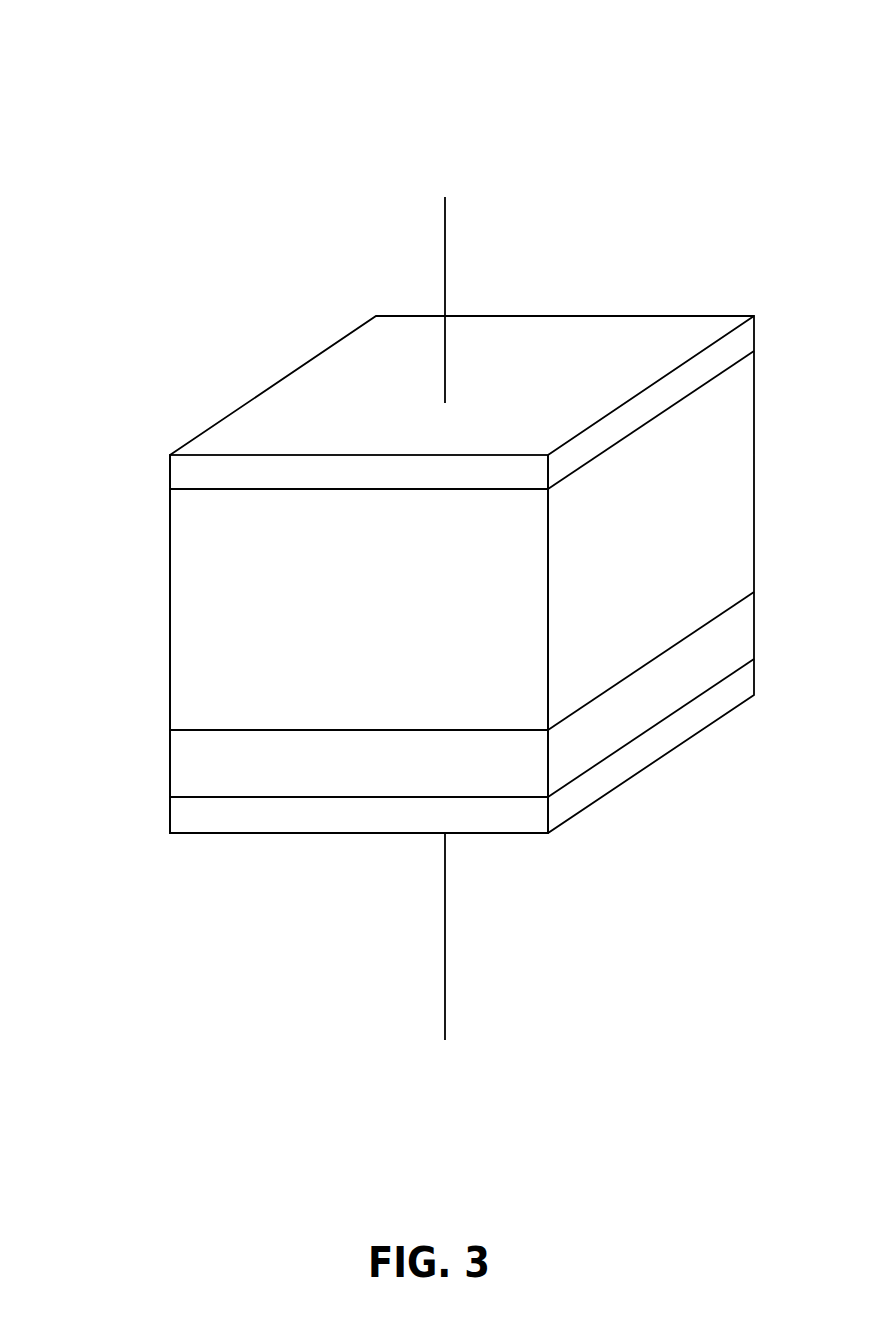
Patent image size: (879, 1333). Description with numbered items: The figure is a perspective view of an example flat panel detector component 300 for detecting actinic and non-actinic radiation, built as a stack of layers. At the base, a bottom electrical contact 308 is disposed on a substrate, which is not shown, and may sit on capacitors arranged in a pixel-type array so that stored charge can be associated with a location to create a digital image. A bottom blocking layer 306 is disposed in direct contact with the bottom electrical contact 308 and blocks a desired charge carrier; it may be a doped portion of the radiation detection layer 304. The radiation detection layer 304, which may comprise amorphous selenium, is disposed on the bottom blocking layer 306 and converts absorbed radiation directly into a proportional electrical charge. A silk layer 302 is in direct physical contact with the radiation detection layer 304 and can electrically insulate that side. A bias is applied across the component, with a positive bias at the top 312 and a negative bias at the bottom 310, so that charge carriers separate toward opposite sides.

The flat panel detector component 300 is at (160, 44).
The silk layer 302 is at (168, 472).
The radiation detection layer 304 is at (168, 608).
The bottom blocking layer 306 is at (168, 763).
The bottom electrical contact 308 is at (168, 815).
The bottom 310 is at (402, 1064).
The top 312 is at (410, 172).